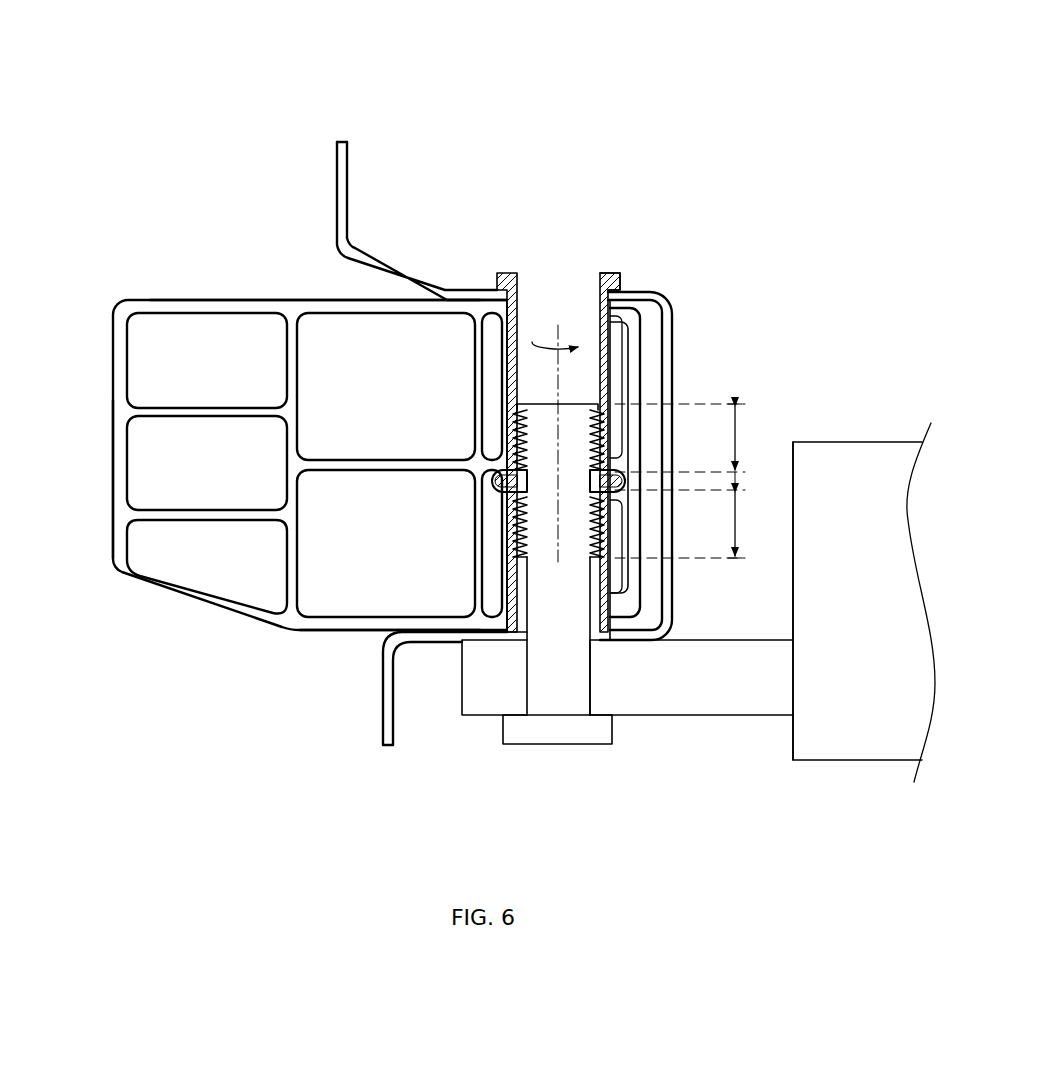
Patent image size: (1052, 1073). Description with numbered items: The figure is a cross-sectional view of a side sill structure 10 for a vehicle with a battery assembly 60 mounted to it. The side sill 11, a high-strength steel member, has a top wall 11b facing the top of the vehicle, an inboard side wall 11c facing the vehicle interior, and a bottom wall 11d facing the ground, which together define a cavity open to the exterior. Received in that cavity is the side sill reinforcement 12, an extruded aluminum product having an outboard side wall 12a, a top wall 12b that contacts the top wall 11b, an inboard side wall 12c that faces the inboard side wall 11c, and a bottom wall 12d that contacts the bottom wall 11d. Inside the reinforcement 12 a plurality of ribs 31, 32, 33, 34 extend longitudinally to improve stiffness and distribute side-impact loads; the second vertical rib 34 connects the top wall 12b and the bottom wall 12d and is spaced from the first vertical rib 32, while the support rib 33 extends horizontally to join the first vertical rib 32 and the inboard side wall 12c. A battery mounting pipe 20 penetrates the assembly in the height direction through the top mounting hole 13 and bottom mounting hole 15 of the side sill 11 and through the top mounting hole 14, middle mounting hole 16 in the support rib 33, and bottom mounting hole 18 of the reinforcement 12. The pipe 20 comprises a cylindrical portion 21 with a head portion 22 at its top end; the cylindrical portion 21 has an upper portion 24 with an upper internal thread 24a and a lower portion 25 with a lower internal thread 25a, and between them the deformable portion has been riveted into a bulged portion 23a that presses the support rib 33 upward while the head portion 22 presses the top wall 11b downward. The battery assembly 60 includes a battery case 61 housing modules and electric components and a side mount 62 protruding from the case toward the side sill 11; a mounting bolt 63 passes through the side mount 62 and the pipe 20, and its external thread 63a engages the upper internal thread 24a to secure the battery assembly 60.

The side sill structure 10 is at (72, 49).
The side sill 11 is at (545, 443).
The top wall 11b is at (478, 293).
The inboard side wall 11c is at (672, 322).
The bottom wall 11d is at (428, 643).
The side sill reinforcement 12 is at (104, 460).
The outboard side wall 12a is at (115, 546).
The top wall 12b is at (337, 300).
The inboard side wall 12c is at (637, 567).
The bottom wall 12d is at (345, 627).
The top mounting hole 13 is at (510, 280).
The top mounting hole 14 is at (600, 300).
The bottom mounting hole 15 is at (600, 641).
The middle mounting hole 16 is at (507, 497).
The bottom mounting hole 18 is at (498, 585).
The battery mounting pipe 20 is at (504, 363).
The cylindrical portion 21 is at (610, 327).
The head portion 22 is at (619, 280).
The bulged portion 23a is at (762, 481).
The upper portion 24 is at (689, 438).
The upper internal thread 24a is at (612, 390).
The lower portion 25 is at (690, 524).
The lower internal thread 25a is at (605, 592).
The rib 31 is at (212, 517).
The first vertical rib 32 is at (297, 381).
The support rib 33 is at (385, 462).
The second vertical rib 34 is at (477, 380).
The battery assembly 60 is at (848, 765).
The battery case 61 is at (808, 758).
The side mount 62 is at (703, 716).
The mounting bolt 63 is at (555, 745).
The external thread 63a is at (612, 428).